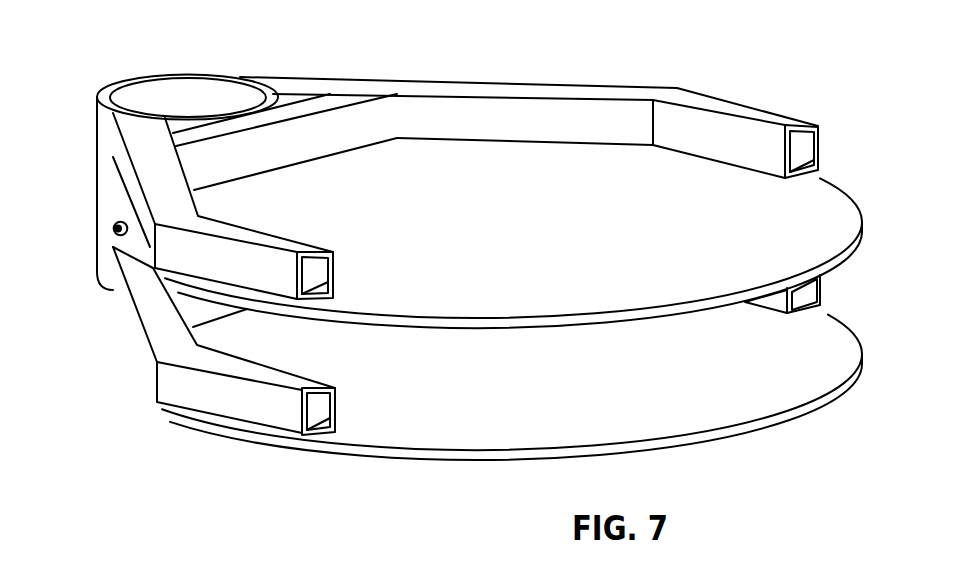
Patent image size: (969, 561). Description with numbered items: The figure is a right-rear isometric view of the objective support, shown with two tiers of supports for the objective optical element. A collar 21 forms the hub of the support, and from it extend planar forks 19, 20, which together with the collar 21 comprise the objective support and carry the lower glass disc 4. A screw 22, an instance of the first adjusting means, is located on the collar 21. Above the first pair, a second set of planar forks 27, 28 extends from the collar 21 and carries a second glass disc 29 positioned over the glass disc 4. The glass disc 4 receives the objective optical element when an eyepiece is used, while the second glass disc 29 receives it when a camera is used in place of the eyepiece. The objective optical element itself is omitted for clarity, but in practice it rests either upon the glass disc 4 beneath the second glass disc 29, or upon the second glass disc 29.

The collar 21 is at (119, 75).
The screw 22 is at (110, 221).
The planar fork 27 is at (178, 179).
The planar fork 28 is at (517, 73).
The planar fork 20 is at (152, 358).
The second glass disc 29 is at (588, 282).
The planar fork 19 is at (827, 303).
The glass disc 4 is at (613, 407).